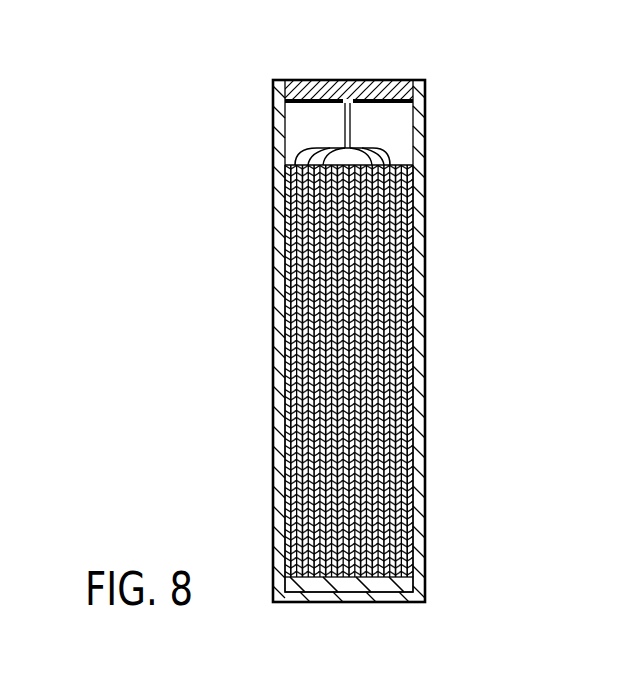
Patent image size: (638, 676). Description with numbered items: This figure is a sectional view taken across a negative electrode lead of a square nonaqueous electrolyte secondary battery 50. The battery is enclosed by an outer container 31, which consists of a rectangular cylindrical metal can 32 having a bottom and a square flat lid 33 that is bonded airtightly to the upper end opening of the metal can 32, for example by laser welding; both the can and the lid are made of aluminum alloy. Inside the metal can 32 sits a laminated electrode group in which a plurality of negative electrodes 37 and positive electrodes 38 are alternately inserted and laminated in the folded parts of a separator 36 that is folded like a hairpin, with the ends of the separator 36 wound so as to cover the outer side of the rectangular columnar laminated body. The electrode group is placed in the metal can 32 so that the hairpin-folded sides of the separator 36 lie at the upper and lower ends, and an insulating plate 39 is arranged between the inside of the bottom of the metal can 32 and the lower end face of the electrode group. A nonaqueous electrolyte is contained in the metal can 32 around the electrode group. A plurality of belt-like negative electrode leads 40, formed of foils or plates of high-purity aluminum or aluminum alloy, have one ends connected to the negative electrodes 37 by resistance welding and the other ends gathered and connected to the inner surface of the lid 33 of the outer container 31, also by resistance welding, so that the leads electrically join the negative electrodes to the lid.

The square nonaqueous electrolyte secondary battery 50 is at (473, 48).
The outer container 31 is at (396, 337).
The metal can 32 is at (417, 117).
The lid 33 is at (416, 88).
The separator 36 is at (284, 254).
The negative electrode 37 is at (294, 218).
The positive electrode 38 is at (290, 190).
The insulating plate 39 is at (408, 584).
The negative electrode lead 40 is at (296, 160).